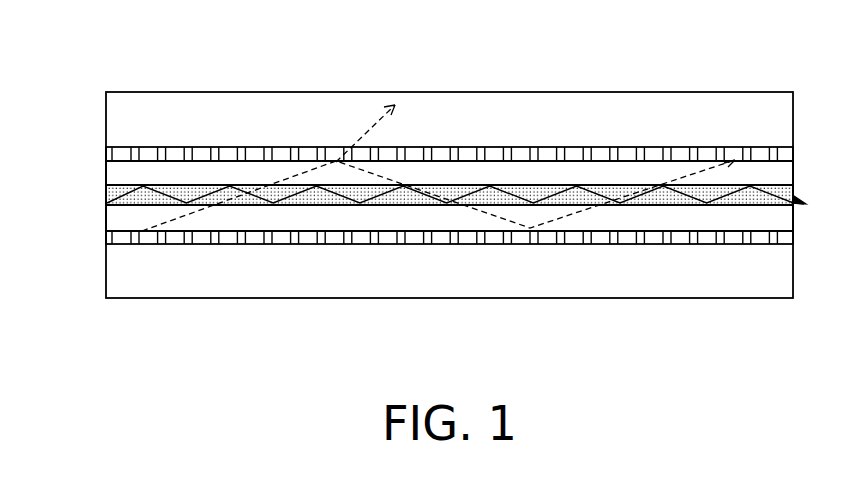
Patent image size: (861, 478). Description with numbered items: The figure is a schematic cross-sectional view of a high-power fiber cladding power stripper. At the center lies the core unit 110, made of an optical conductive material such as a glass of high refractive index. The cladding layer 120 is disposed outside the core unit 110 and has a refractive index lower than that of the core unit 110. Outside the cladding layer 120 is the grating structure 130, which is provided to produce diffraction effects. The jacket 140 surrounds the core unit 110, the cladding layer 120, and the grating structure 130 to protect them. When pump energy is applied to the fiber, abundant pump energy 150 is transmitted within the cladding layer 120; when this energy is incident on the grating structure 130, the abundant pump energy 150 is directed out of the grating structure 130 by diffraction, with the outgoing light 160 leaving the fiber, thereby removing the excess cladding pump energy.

The core unit 110 is at (109, 198).
The cladding layer 120 is at (109, 177).
The grating structure 130 is at (109, 154).
The jacket 140 is at (109, 114).
The abundant pump energy 150 is at (200, 236).
The emitted light 160 is at (363, 110).